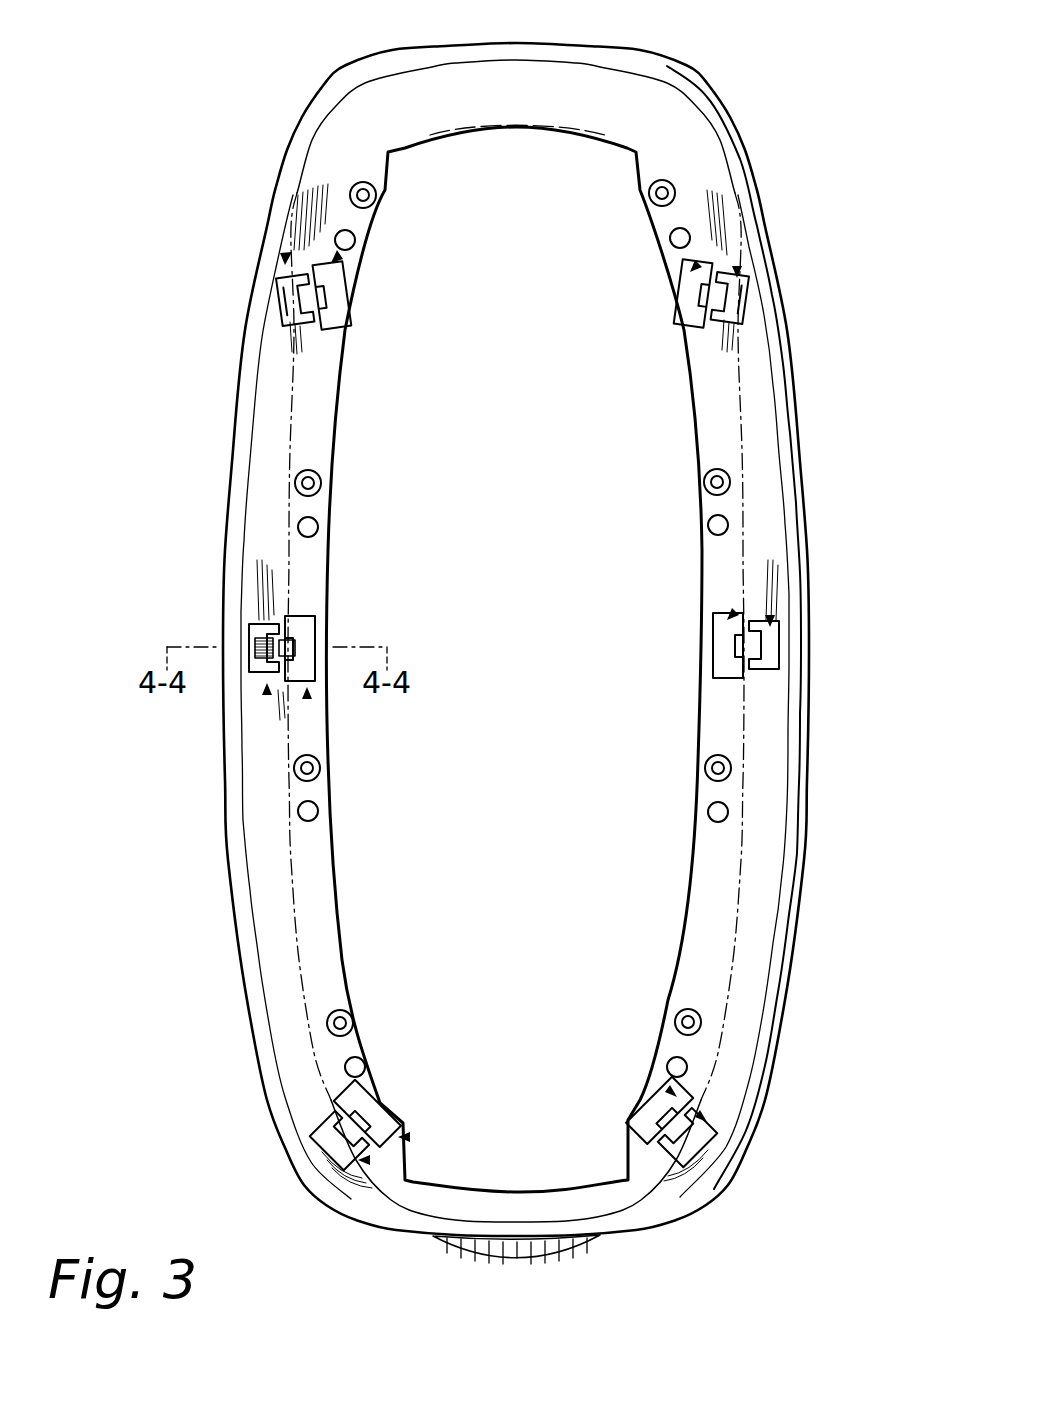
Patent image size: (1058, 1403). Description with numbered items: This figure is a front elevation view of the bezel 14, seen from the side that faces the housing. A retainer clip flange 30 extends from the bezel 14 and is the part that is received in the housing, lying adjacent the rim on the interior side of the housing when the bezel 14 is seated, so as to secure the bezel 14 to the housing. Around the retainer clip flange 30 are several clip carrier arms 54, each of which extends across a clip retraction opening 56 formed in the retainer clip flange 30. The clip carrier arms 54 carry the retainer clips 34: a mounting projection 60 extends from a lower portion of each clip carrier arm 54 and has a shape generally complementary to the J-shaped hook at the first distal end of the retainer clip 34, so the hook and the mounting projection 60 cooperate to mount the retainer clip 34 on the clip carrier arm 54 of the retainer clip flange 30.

The bezel 14 is at (707, 74).
The retainer clip flange 30 is at (722, 182).
The retainer clip 34 is at (258, 642).
The clip carrier arm 54 is at (282, 296).
The clip retraction opening 56 is at (339, 252).
The mounting projection 60 is at (342, 300).